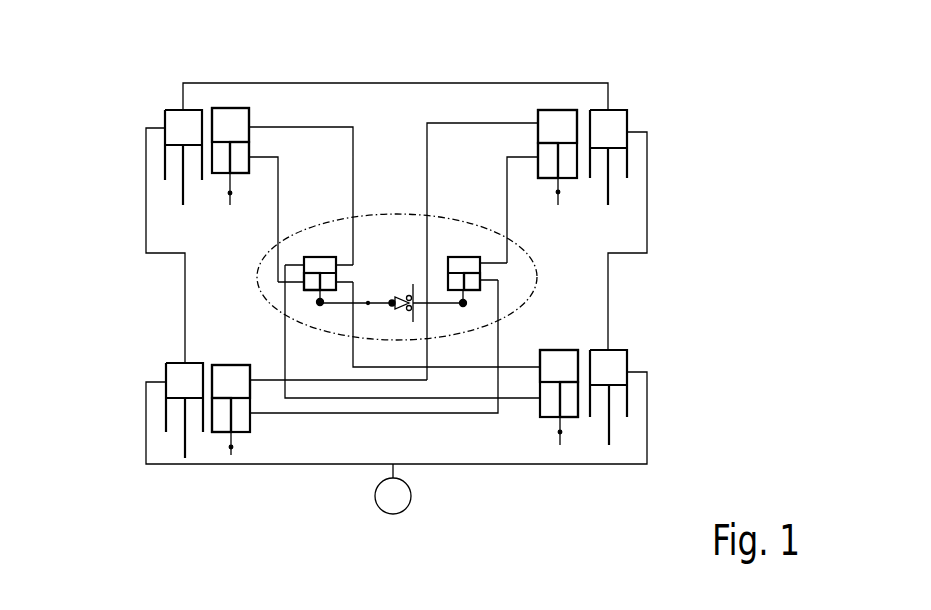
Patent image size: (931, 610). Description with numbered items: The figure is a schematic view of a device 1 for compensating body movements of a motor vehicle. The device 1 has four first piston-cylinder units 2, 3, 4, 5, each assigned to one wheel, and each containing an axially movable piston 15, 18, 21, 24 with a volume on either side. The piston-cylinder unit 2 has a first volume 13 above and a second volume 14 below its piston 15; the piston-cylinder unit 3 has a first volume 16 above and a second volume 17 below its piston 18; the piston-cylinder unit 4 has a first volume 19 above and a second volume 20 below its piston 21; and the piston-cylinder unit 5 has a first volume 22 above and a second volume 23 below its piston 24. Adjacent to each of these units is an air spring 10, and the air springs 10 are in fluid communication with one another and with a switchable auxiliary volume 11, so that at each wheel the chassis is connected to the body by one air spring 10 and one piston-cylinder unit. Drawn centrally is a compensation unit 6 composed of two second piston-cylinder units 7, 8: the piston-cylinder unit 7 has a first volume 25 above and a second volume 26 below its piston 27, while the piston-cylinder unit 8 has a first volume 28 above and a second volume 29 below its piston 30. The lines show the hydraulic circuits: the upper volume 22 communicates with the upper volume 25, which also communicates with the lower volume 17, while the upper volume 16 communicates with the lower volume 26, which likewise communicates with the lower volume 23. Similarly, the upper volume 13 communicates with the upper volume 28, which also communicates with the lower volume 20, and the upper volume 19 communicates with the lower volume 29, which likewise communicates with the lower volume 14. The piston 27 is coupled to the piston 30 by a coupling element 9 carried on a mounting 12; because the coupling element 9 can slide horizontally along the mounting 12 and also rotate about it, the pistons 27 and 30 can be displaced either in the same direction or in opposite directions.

The device 1 is at (102, 112).
The first piston-cylinder unit 2 is at (548, 110).
The first piston-cylinder unit 3 is at (567, 350).
The first piston-cylinder unit 4 is at (245, 433).
The first piston-cylinder unit 5 is at (237, 108).
The compensation unit 6 is at (388, 214).
The second piston-cylinder unit 7 is at (320, 306).
The second piston-cylinder unit 8 is at (464, 257).
The coupling element 9 is at (368, 305).
The air spring 10 is at (177, 128).
The switchable auxiliary volume 11 is at (389, 500).
The mounting 12 is at (412, 318).
The first volume 13 is at (563, 127).
The second volume 14 is at (567, 165).
The piston 15 is at (603, 191).
The first volume 16 is at (552, 371).
The second volume 17 is at (570, 405).
The piston 18 is at (560, 432).
The first volume 19 is at (220, 381).
The second volume 20 is at (220, 417).
The piston 21 is at (231, 447).
The first volume 22 is at (218, 120).
The second volume 23 is at (240, 157).
The piston 24 is at (230, 193).
The first volume 25 is at (313, 266).
The second volume 26 is at (312, 283).
The piston 27 is at (299, 292).
The first volume 28 is at (463, 282).
The second volume 29 is at (465, 306).
The piston 30 is at (450, 303).